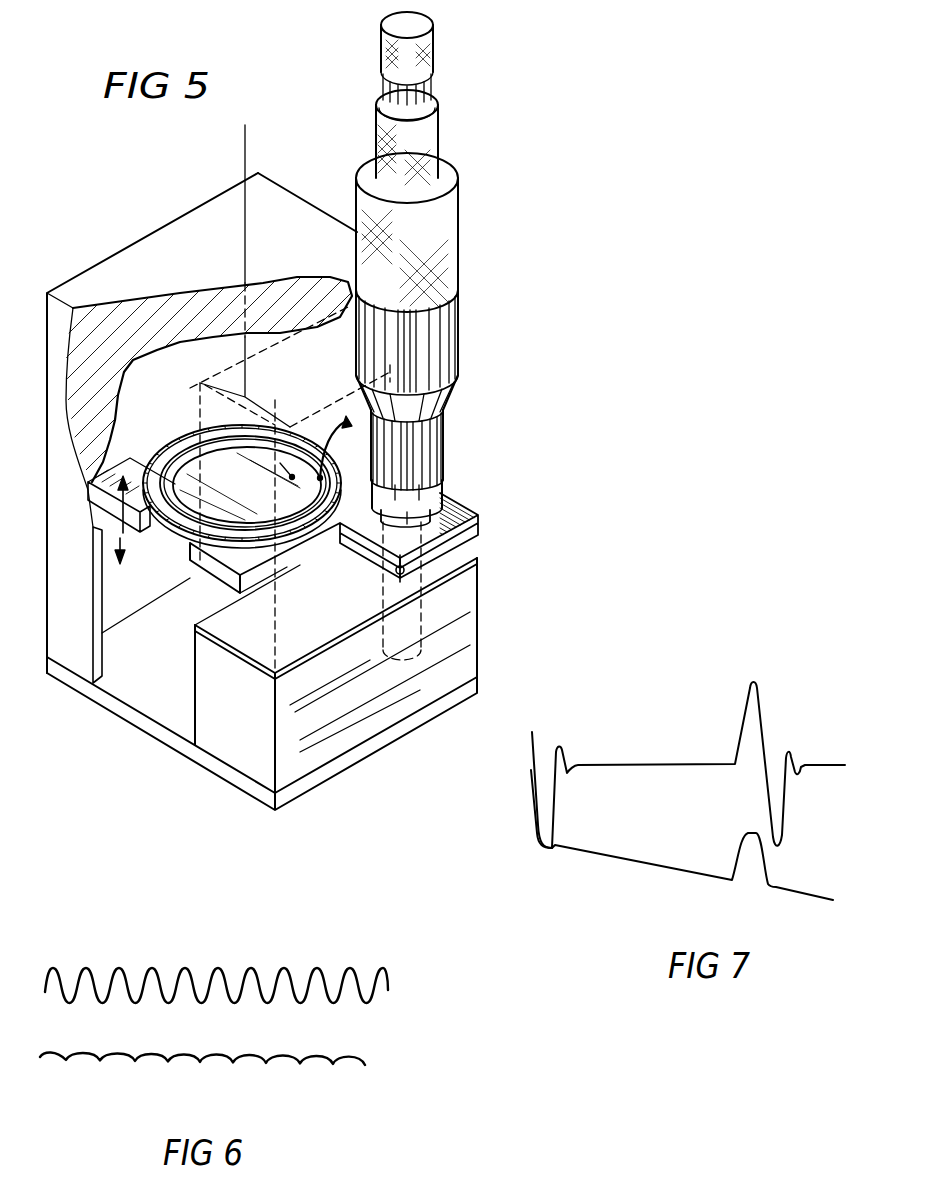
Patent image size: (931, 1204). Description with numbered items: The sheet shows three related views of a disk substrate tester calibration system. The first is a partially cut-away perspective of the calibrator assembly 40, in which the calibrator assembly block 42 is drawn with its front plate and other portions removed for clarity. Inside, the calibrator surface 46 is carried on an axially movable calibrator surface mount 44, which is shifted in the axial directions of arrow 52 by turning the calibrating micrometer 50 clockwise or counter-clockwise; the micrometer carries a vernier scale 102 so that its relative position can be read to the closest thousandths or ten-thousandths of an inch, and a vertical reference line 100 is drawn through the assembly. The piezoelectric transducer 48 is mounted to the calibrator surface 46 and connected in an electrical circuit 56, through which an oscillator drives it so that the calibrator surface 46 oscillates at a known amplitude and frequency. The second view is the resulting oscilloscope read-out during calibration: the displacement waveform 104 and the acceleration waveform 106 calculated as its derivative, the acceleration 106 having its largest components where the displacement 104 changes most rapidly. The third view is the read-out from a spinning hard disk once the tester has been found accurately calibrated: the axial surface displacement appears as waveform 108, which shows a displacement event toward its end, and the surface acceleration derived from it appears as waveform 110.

In FIG. 5, the calibrator assembly 40 is at (553, 356).
In FIG. 5, the calibrator assembly block 42 is at (118, 265).
In FIG. 5, the calibrator surface mount 44 is at (302, 556).
In FIG. 5, the calibrator surface 46 is at (178, 517).
In FIG. 5, the piezoelectric transducer 48 is at (228, 482).
In FIG. 5, the calibrating micrometer 50 is at (458, 200).
In FIG. 5, the arrow 52 is at (120, 538).
In FIG. 5, the electrical circuit 56 is at (338, 442).
In FIG. 5, the vertical axis 100 is at (245, 150).
In FIG. 5, the vernier scale 102 is at (447, 431).
In FIG. 6, the displacement waveform 104 is at (365, 1065).
In FIG. 6, the acceleration waveform 106 is at (388, 980).
In FIG. 7, the axial surface displacement waveform 108 is at (605, 858).
In FIG. 7, the surface acceleration waveform 110 is at (688, 760).